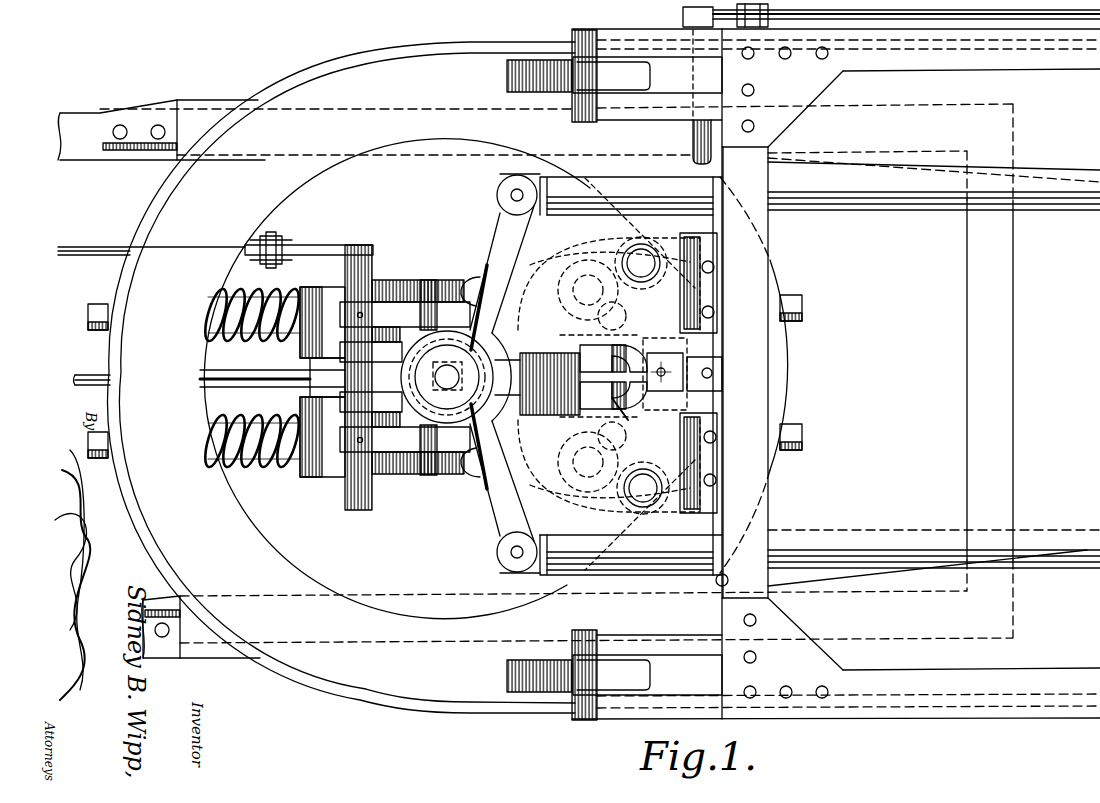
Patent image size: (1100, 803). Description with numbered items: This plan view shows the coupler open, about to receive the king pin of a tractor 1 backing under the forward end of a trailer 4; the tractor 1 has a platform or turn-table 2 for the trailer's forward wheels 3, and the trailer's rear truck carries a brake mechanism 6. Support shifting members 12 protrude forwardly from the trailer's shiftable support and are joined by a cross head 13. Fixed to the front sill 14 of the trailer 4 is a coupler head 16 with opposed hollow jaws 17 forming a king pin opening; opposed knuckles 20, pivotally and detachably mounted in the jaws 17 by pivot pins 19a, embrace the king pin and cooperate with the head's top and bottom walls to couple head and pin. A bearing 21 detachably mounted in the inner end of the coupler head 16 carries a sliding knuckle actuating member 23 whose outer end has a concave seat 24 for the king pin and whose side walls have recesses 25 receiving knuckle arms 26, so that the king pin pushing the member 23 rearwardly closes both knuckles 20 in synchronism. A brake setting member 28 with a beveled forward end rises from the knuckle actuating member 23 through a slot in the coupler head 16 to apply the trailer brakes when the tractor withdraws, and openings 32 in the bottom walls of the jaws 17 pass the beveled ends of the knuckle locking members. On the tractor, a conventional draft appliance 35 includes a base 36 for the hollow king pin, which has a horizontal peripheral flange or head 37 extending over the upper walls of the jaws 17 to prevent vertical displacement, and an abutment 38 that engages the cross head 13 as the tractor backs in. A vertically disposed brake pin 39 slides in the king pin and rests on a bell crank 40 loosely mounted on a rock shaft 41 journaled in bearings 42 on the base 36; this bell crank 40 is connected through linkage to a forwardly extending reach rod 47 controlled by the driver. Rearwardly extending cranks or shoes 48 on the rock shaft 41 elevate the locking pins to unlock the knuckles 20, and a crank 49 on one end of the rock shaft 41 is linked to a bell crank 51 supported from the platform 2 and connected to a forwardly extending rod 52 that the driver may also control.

The tractor 1 is at (85, 120).
The platform or turn-table 2 is at (157, 373).
The wheels 3 is at (507, 77).
The trailer 4 is at (1093, 60).
The brake mechanism 6 is at (975, 14).
The support shifting members 12 is at (918, 205).
The cross head 13 is at (493, 242).
The front sill 14 is at (760, 233).
The coupler head 16 is at (700, 465).
The jaws 17 is at (478, 280).
The pivot pins 19a is at (643, 262).
The knuckles 20 is at (620, 376).
The bearing 21 is at (722, 378).
The knuckle actuating member 23 is at (610, 360).
The concave seat 24 is at (610, 392).
The recesses 25 is at (635, 416).
The knuckle arms 26 is at (650, 348).
The brake setting member 28 is at (680, 340).
The openings 32 is at (593, 376).
The draft appliance 35 is at (275, 470).
The base 36 is at (312, 399).
The horizontal peripheral flange or head 37 is at (438, 440).
The abutment 38 is at (470, 390).
The brake pin 39 is at (455, 375).
The bell crank 40 is at (382, 345).
The rock shaft 41 is at (358, 423).
The bearings 42 is at (370, 288).
The reach rod 47 is at (88, 374).
The cranks or shoes 48 is at (385, 377).
The crank 49 is at (320, 247).
The bell crank 51 is at (250, 240).
The rod 52 is at (110, 250).